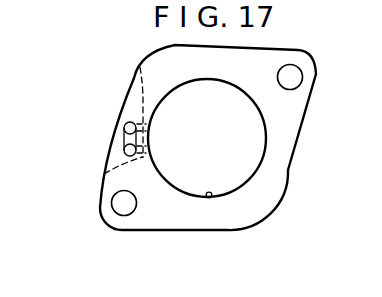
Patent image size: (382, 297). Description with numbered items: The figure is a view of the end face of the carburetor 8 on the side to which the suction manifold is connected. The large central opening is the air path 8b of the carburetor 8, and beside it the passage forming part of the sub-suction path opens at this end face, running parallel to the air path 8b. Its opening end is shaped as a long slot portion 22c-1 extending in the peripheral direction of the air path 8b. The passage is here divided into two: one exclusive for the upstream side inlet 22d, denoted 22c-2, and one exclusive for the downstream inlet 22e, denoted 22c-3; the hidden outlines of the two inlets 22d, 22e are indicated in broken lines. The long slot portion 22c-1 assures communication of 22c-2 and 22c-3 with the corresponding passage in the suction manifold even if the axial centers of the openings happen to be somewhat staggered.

The carburetor 8 is at (307, 125).
The air path 8b is at (209, 198).
The long slot portion 22c-1 is at (124, 134).
The passage exclusive for the upstream side inlet 22c-2 is at (128, 122).
The passage exclusive for the downstream inlet 22c-3 is at (124, 149).
The upstream side inlet 22d is at (141, 74).
The downstream inlet 22e is at (105, 173).